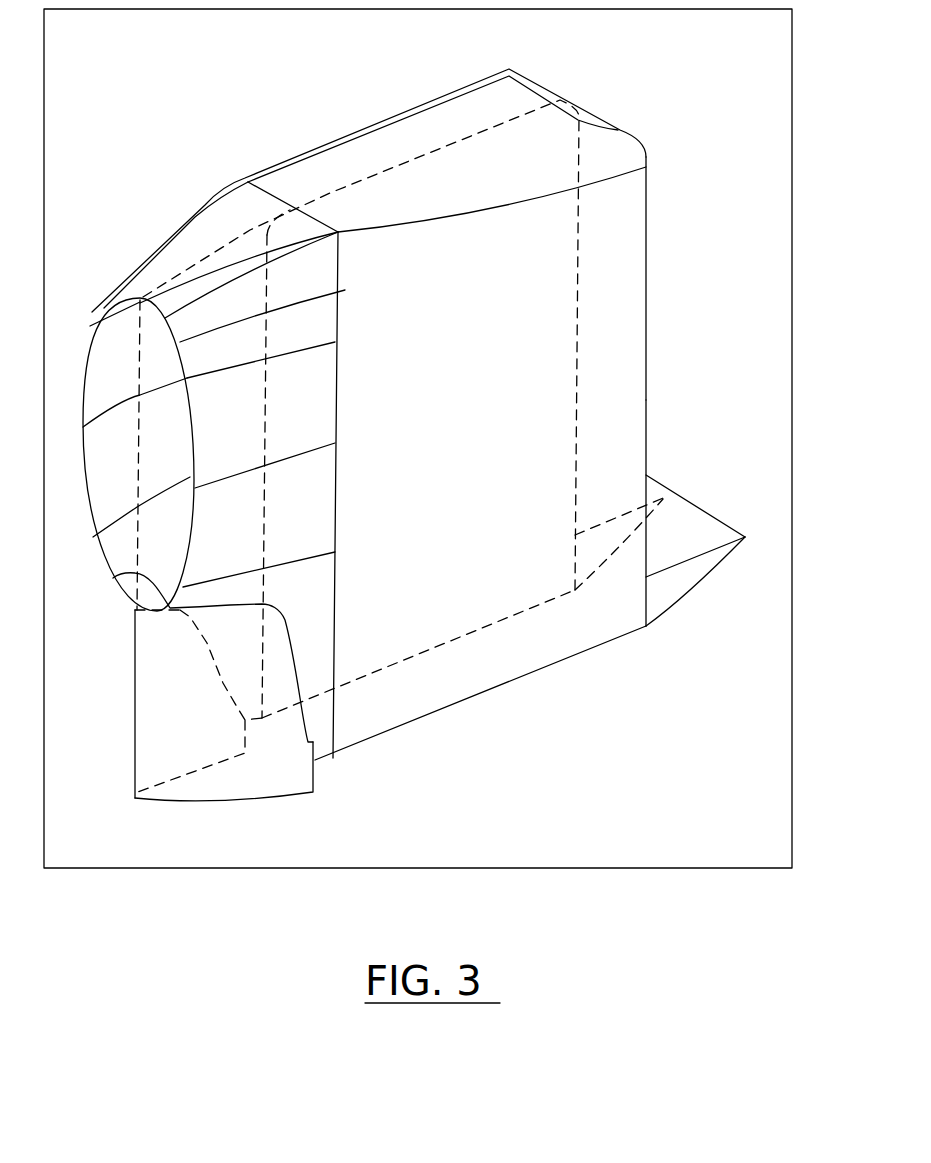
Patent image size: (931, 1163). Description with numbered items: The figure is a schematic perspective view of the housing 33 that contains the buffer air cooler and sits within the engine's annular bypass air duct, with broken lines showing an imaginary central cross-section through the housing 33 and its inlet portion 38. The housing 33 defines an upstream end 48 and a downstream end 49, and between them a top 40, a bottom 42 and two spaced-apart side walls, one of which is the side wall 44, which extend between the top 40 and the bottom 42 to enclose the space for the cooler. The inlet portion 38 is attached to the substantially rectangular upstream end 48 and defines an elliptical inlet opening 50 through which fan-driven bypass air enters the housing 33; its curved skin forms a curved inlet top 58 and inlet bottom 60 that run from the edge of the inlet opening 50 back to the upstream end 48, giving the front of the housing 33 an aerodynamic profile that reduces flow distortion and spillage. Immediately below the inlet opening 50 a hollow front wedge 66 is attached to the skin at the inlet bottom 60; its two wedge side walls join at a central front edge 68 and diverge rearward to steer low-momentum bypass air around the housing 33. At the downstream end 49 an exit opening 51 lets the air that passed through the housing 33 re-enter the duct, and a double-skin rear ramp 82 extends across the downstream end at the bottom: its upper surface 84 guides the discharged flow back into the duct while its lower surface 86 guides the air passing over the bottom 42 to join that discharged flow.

The housing 33 is at (402, 110).
The inlet portion 38 is at (138, 270).
The top 40 is at (341, 162).
The inlet top 58 is at (190, 247).
The inlet opening 50 is at (103, 367).
The upstream end 48 is at (333, 707).
The side wall 44 is at (613, 286).
The exit opening 51 is at (648, 224).
The downstream end 49 is at (648, 381).
The bottom 42 is at (500, 690).
The upper surface 84 is at (688, 530).
The rear ramp 82 is at (665, 593).
The lower surface 86 is at (698, 580).
The central front edge 68 is at (135, 693).
The front wedge 66 is at (235, 783).
The inlet bottom 60 is at (315, 720).